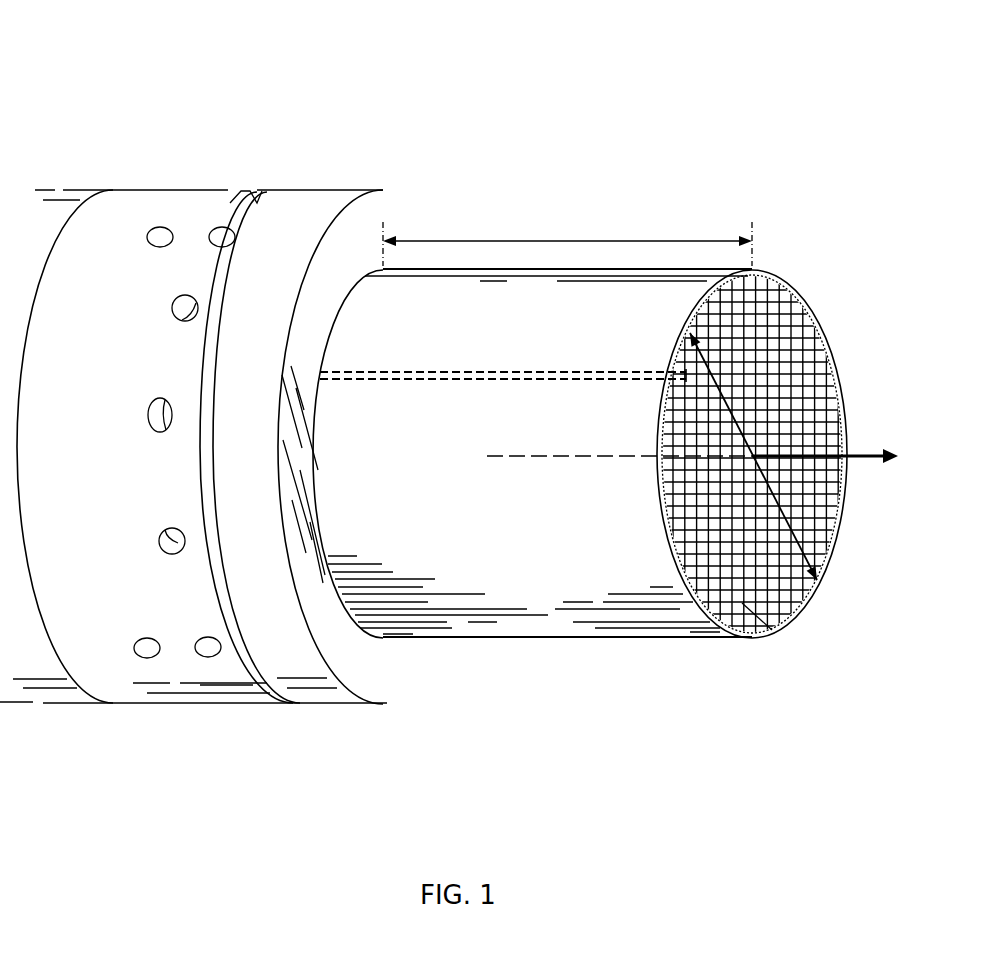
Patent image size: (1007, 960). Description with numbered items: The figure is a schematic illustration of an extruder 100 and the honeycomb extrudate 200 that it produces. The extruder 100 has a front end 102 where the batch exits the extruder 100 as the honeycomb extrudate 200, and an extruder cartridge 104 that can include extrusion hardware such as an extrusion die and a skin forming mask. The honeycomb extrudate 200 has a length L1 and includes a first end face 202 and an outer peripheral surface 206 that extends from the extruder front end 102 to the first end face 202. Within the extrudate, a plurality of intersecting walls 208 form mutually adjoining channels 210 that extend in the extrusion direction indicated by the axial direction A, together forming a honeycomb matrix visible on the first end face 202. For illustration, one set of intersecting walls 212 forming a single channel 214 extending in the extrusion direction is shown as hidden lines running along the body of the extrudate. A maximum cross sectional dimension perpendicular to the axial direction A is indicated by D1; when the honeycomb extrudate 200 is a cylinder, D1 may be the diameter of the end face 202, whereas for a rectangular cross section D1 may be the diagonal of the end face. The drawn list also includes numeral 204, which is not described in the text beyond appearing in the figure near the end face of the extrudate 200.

The extruder 100 is at (166, 29).
The front end 102 is at (303, 200).
The extruder cartridge 104 is at (208, 687).
The honeycomb extrudate 200 is at (593, 61).
The first end face 202 is at (790, 347).
The outer skin 204 is at (773, 612).
The outer peripheral surface 206 is at (543, 594).
The intersecting walls 208 is at (810, 360).
The channels 210 is at (758, 607).
The intersecting walls 212 is at (535, 372).
The channel 214 is at (490, 372).
The axial direction A is at (858, 462).
The maximum cross sectional dimension D1 is at (797, 537).
The length L1 is at (597, 241).